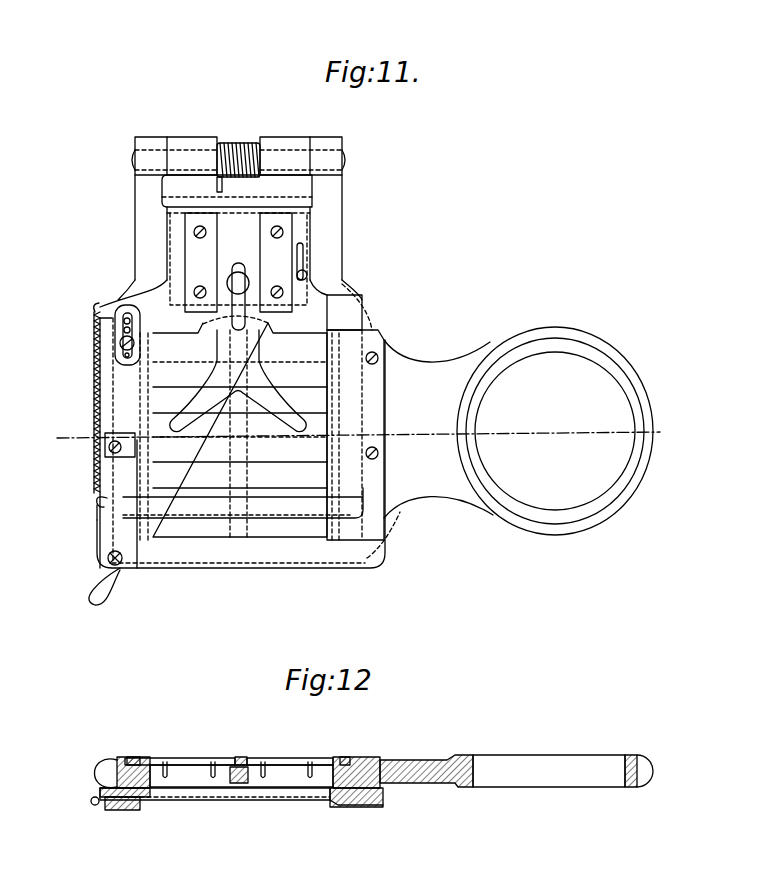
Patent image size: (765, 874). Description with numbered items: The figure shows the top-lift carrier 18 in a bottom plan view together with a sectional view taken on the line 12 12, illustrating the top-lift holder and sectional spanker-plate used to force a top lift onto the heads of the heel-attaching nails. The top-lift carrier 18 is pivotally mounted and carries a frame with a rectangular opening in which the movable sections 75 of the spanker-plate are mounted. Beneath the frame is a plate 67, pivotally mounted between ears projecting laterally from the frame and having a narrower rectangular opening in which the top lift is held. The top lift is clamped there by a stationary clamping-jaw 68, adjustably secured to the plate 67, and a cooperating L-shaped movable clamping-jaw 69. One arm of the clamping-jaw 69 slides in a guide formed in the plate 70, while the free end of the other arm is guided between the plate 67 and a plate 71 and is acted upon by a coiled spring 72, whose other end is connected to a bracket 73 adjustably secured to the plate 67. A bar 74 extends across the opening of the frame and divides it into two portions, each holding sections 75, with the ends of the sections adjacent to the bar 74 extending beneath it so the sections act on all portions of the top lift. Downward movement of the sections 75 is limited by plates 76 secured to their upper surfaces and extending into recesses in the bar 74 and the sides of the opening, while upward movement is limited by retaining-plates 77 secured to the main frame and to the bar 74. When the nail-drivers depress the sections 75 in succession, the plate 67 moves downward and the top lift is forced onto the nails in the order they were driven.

In FIG. 11, the section line 12 is at (358, 433).
In FIG. 11, the top-lift carrier 18 is at (412, 364).
In FIG. 12, the top-lift carrier 18 is at (447, 760).
In FIG. 11, the plate 67 is at (142, 290).
In FIG. 12, the plate 67 is at (100, 788).
In FIG. 11, the stationary clamping-jaw 68 is at (267, 328).
In FIG. 11, the movable clamping-jaw 69 is at (350, 313).
In FIG. 12, the movable clamping-jaw 69 is at (347, 800).
In FIG. 11, the plate 70 is at (378, 340).
In FIG. 12, the plate 70 is at (385, 808).
In FIG. 11, the plate 71 is at (97, 530).
In FIG. 12, the plate 71 is at (137, 806).
In FIG. 11, the coiled spring 72 is at (93, 380).
In FIG. 12, the coiled spring 72 is at (97, 803).
In FIG. 11, the bracket 73 is at (100, 310).
In FIG. 11, the bar 74 is at (235, 540).
In FIG. 12, the bar 74 is at (236, 768).
In FIG. 11, the sections of the spanker-plate 75 is at (392, 412).
In FIG. 12, the sections of the spanker-plate 75 is at (208, 780).
In FIG. 12, the plates 76 is at (190, 762).
In FIG. 12, the retaining-plates 77 is at (133, 758).